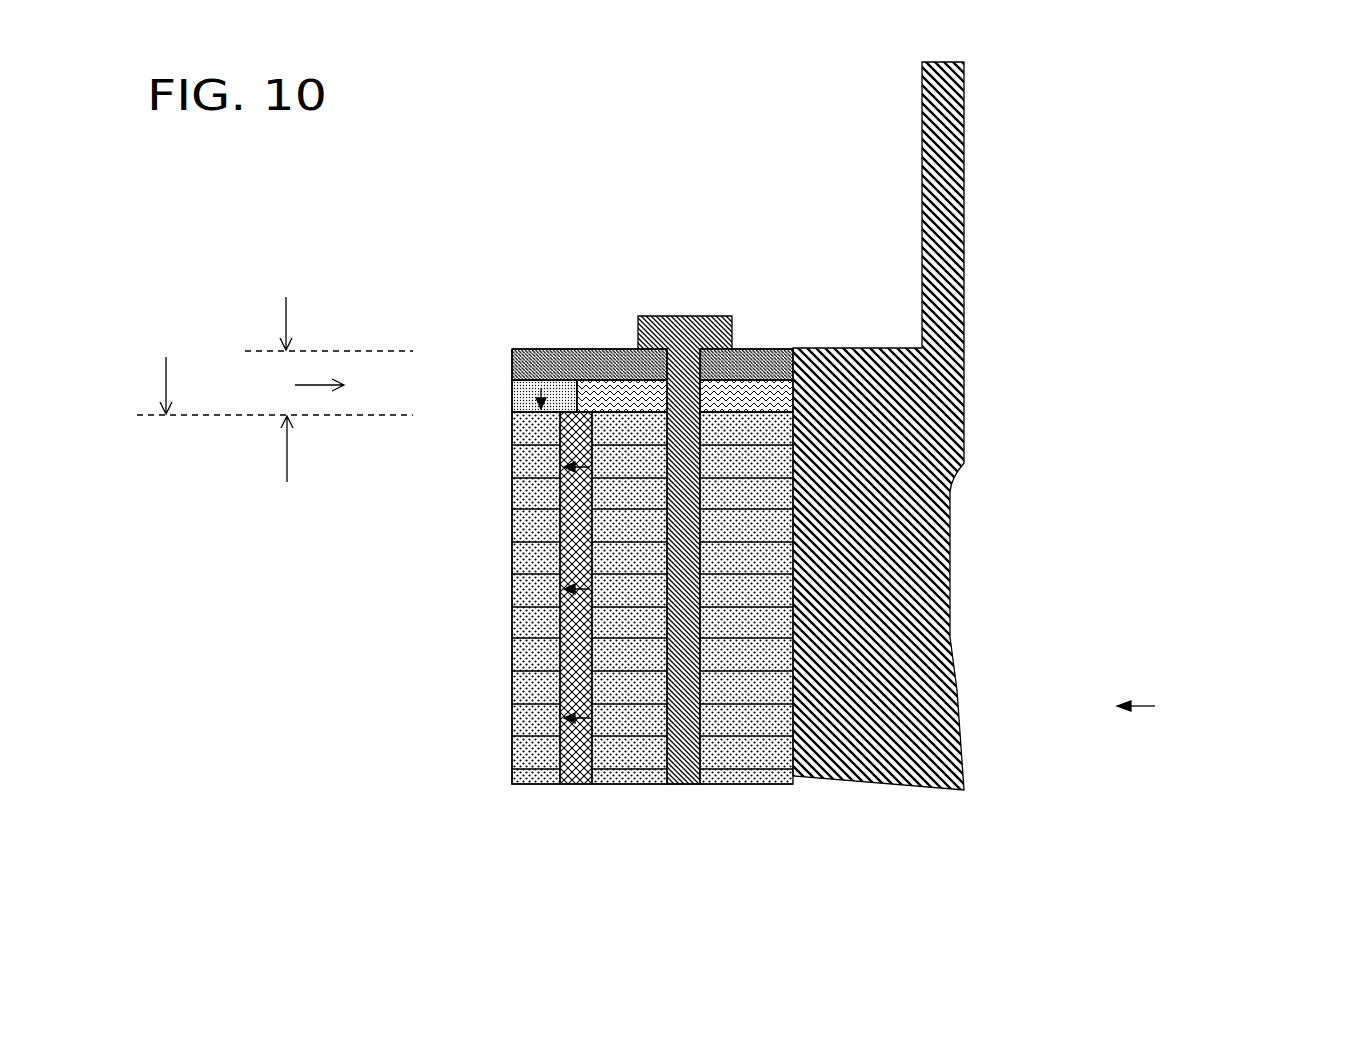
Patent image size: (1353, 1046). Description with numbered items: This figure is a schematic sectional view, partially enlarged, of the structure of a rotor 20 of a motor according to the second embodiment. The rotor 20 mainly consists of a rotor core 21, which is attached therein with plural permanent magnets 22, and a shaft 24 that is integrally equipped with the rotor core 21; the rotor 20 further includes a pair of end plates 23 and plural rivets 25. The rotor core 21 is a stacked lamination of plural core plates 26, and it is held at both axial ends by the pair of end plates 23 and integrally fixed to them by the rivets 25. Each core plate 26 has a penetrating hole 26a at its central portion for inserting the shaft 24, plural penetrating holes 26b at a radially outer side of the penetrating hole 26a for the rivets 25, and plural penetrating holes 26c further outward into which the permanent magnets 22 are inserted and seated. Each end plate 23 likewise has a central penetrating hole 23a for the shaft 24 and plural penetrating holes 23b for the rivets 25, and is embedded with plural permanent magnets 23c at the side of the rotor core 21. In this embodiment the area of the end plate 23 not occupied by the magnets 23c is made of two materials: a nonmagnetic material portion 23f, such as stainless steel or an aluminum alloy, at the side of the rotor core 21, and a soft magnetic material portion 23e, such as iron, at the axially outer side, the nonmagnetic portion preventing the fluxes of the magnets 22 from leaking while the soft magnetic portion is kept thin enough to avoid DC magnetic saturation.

The rotor 20 is at (1166, 149).
The rotor core 21 is at (605, 662).
The permanent magnet 22 is at (585, 642).
The end plate 23 is at (625, 299).
The penetrating hole 23a is at (780, 356).
The penetrating hole 23b is at (622, 357).
The permanent magnet 23c is at (512, 392).
The soft magnetic material portion 23e is at (543, 364).
The nonmagnetic material portion 23f is at (598, 378).
The shaft 24 is at (893, 763).
The rivet 25 is at (685, 777).
The core plate 26 is at (605, 662).
The penetrating hole 26a is at (775, 750).
The penetrating hole 26b is at (708, 753).
The penetrating hole 26c is at (553, 754).